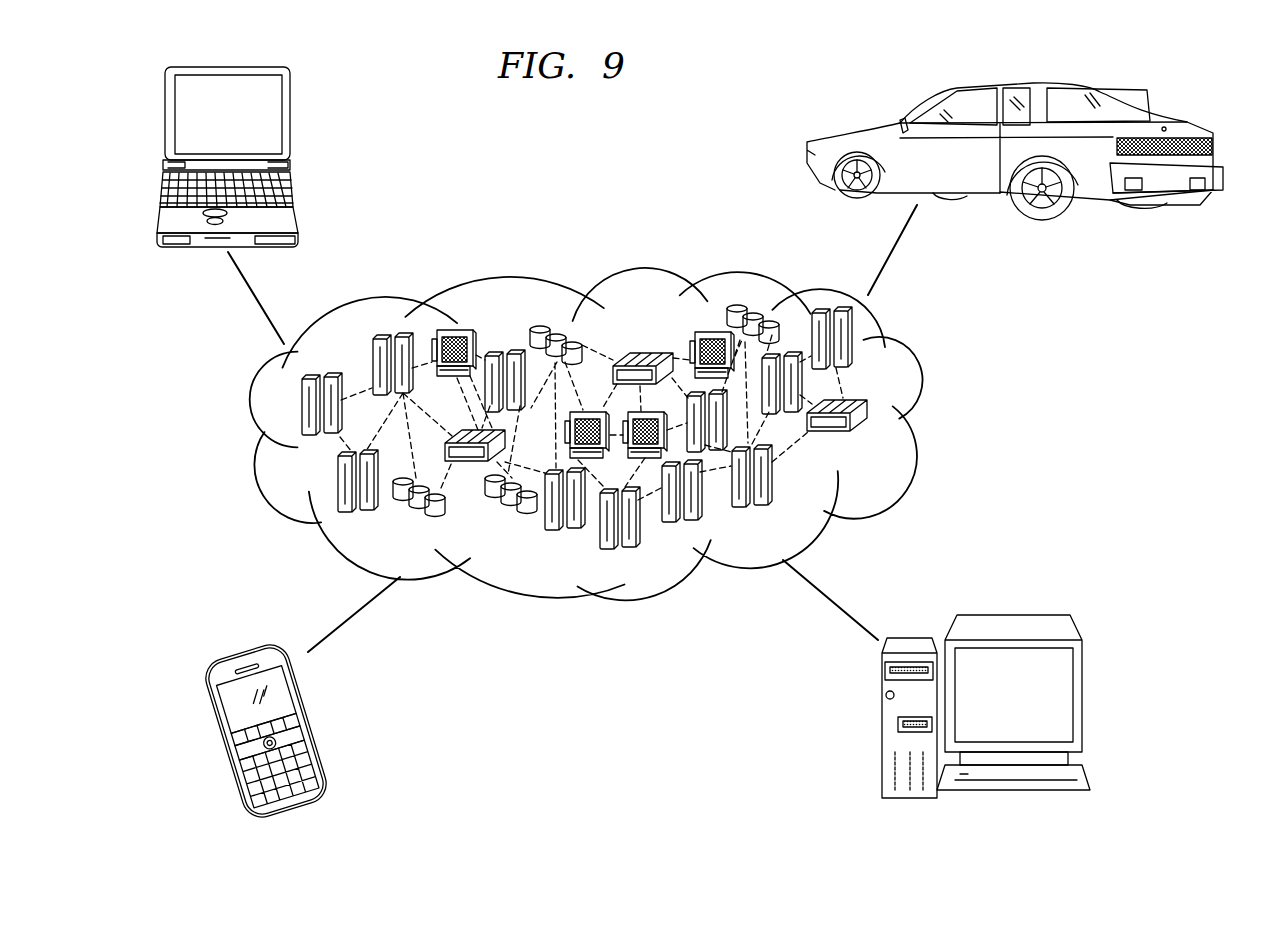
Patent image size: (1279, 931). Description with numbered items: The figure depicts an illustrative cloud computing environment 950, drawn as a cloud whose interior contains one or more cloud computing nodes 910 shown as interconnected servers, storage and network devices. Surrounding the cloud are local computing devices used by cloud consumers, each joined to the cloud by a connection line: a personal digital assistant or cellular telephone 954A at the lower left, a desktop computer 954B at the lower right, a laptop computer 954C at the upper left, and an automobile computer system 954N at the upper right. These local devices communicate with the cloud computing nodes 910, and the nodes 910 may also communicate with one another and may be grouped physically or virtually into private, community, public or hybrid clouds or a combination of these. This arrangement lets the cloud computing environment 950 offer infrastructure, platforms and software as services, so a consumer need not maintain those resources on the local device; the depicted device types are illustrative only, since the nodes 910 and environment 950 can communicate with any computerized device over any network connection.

The cloud computing environment 950 is at (915, 360).
The cloud computing nodes 910 is at (876, 442).
The personal digital assistant or cellular telephone 954A is at (208, 720).
The desktop computer 954B is at (1013, 615).
The laptop computer 954C is at (163, 108).
The automobile computer system 954N is at (1187, 123).